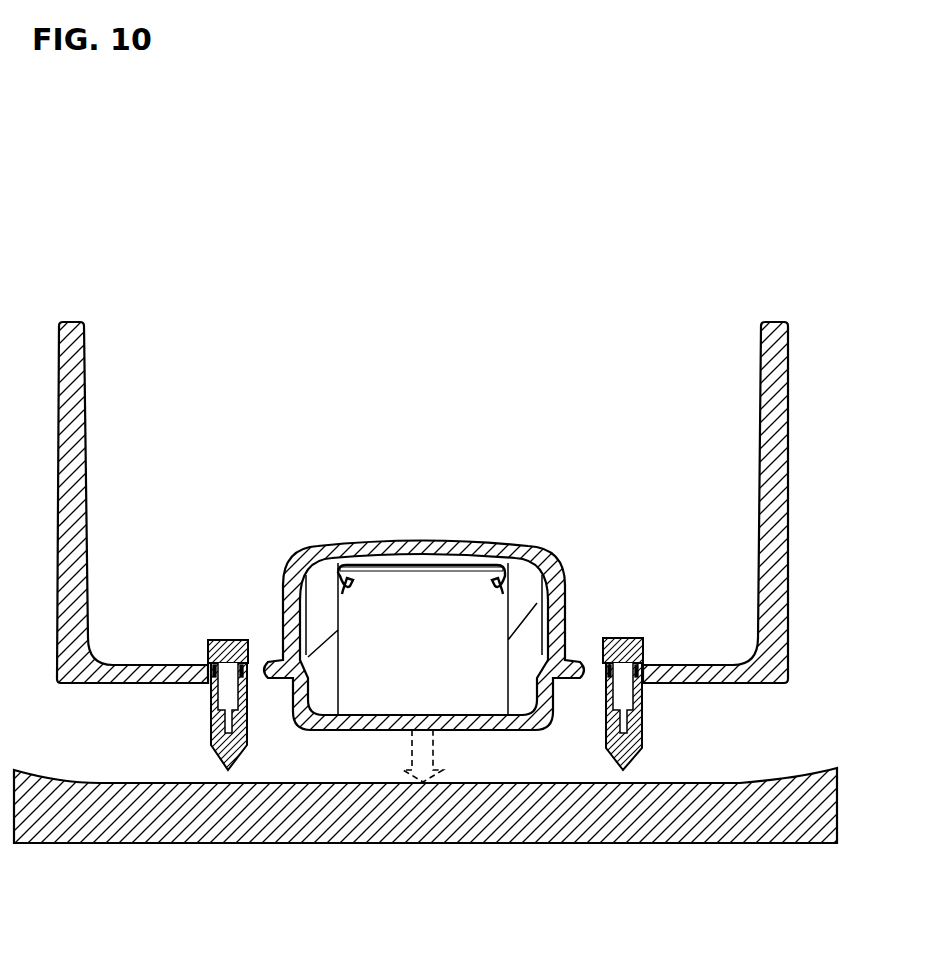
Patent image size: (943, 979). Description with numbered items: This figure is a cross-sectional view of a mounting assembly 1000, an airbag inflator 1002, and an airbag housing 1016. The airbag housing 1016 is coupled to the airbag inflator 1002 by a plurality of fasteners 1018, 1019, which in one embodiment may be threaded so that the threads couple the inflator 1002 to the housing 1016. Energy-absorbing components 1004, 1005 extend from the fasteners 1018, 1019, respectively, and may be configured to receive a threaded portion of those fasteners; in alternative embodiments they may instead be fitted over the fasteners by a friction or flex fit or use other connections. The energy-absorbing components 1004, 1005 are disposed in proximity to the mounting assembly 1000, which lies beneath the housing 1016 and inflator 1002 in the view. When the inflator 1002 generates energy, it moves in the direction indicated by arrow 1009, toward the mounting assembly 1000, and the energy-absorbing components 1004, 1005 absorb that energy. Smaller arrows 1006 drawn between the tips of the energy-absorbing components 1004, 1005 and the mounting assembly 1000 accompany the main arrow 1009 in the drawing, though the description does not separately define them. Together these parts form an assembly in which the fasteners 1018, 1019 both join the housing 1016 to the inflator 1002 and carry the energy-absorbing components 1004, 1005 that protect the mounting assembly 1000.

The mounting assembly 1000 is at (335, 843).
The airbag inflator 1002 is at (512, 548).
The energy-absorbing component 1004 is at (210, 742).
The energy-absorbing component 1005 is at (643, 742).
The pin insertion direction arrow 1006 is at (246, 777).
The arrow 1009 is at (433, 748).
The airbag housing 1016 is at (88, 490).
The fastener 1018 is at (232, 640).
The fastener 1019 is at (628, 638).